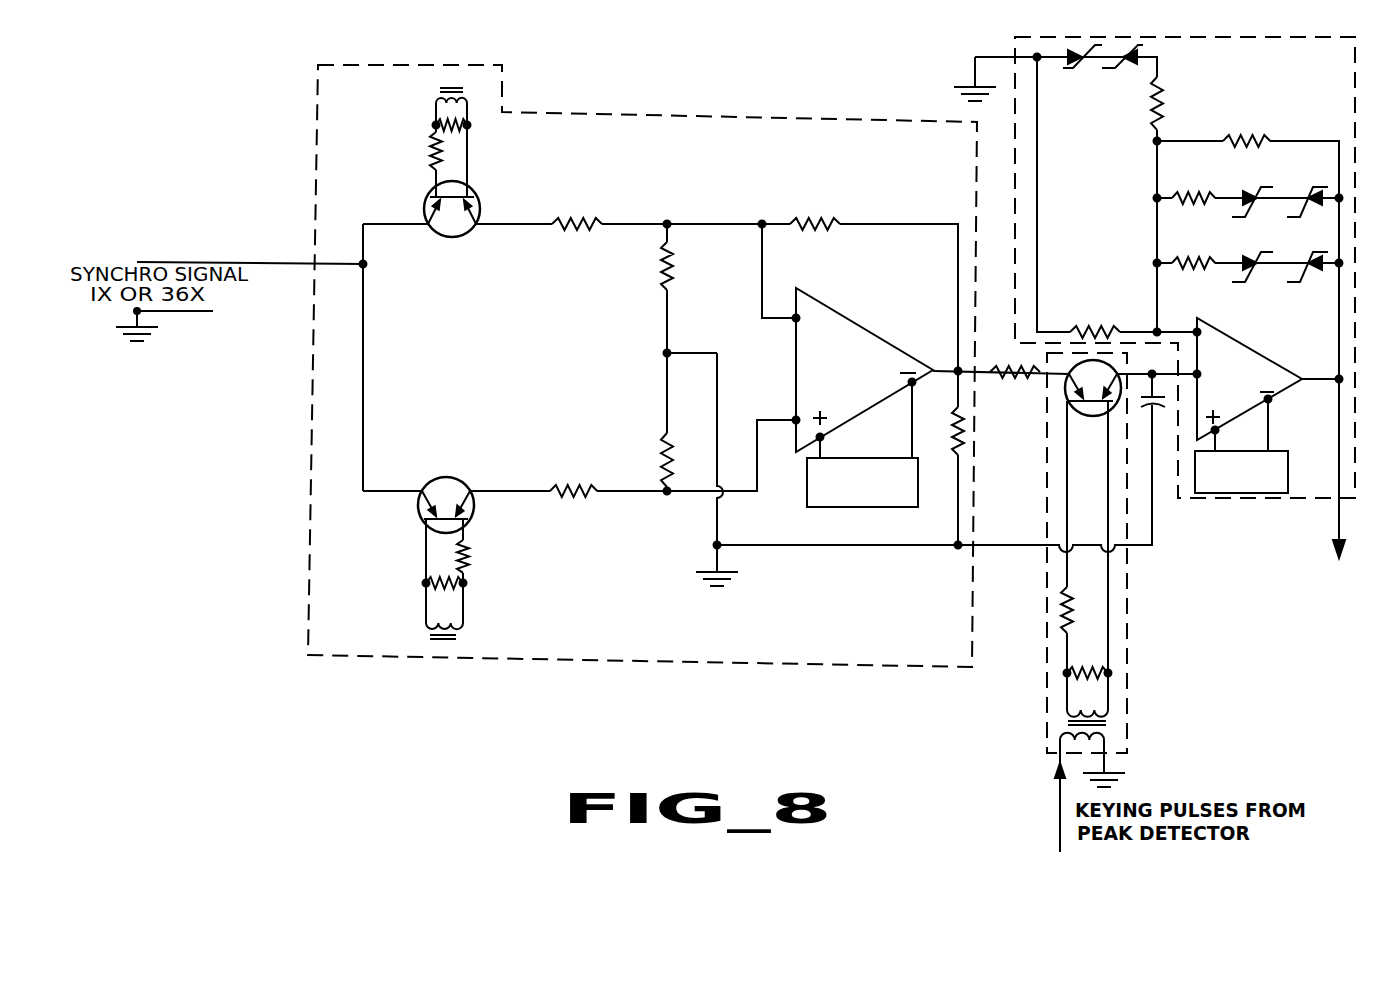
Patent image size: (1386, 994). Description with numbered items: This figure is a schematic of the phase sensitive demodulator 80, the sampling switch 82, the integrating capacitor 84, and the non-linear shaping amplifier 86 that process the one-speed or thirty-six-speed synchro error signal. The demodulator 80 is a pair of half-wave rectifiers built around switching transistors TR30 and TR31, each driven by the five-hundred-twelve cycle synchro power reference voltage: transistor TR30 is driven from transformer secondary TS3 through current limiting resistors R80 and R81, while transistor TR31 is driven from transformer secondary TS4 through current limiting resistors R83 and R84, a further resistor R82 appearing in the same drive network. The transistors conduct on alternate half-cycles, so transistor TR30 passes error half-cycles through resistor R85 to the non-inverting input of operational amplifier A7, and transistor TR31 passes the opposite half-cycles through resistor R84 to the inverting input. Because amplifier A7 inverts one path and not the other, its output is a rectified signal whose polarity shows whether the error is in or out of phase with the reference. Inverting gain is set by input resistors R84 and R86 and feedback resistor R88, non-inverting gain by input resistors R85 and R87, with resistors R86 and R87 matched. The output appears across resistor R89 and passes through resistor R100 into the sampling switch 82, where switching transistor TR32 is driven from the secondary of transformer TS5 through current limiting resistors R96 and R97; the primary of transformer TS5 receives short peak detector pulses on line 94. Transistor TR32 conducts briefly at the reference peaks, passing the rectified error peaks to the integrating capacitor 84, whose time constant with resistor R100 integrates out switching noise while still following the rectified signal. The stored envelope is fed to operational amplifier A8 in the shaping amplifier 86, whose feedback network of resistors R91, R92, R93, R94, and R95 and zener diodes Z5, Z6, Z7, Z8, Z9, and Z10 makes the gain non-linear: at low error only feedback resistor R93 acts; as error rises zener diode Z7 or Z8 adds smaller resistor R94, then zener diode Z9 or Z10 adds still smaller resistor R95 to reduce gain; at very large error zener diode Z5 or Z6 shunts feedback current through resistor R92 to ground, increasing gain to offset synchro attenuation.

The phase sensitive demodulator 80 is at (340, 656).
The sampling switch 82 is at (1127, 652).
The integrating capacitor 84 is at (1164, 395).
The non-linear shaping amplifier 86 is at (1296, 498).
The line 94 is at (1058, 805).
The current limiting resistor R80 is at (430, 586).
The current limiting resistor R81 is at (470, 556).
The resistor R82 is at (466, 129).
The current limiting resistor R83 is at (435, 158).
The current limiting resistor R84 is at (596, 212).
The current limiting resistor R85 is at (586, 472).
The input resistor R86 is at (663, 268).
The input resistor R87 is at (660, 449).
The feedback resistor R88 is at (831, 214).
The resistor R89 is at (962, 430).
The feedback resistor R91 is at (1098, 328).
The resistor R92 is at (1164, 96).
The feedback resistor R93 is at (1266, 120).
The feedback resistor R94 is at (1211, 206).
The feedback resistor R95 is at (1211, 271).
The current limiting resistor R96 is at (1063, 592).
The current limiting resistor R97 is at (1060, 673).
The resistor R100 is at (1040, 376).
The switching transistor TR30 is at (443, 477).
The switching transistor TR31 is at (472, 238).
The switching transistor TR32 is at (1070, 405).
The transformer secondary TS3 is at (463, 631).
The transformer secondary TS4 is at (436, 94).
The transformer TS5 is at (1103, 728).
The zener diode Z5 is at (1069, 64).
The zener diode Z6 is at (1138, 57).
The zener diode Z7 is at (1241, 195).
The zener diode Z8 is at (1313, 195).
The zener diode Z9 is at (1241, 260).
The zener diode Z10 is at (1316, 270).
The operational amplifier A7 is at (846, 318).
The operational amplifier A8 is at (1245, 346).